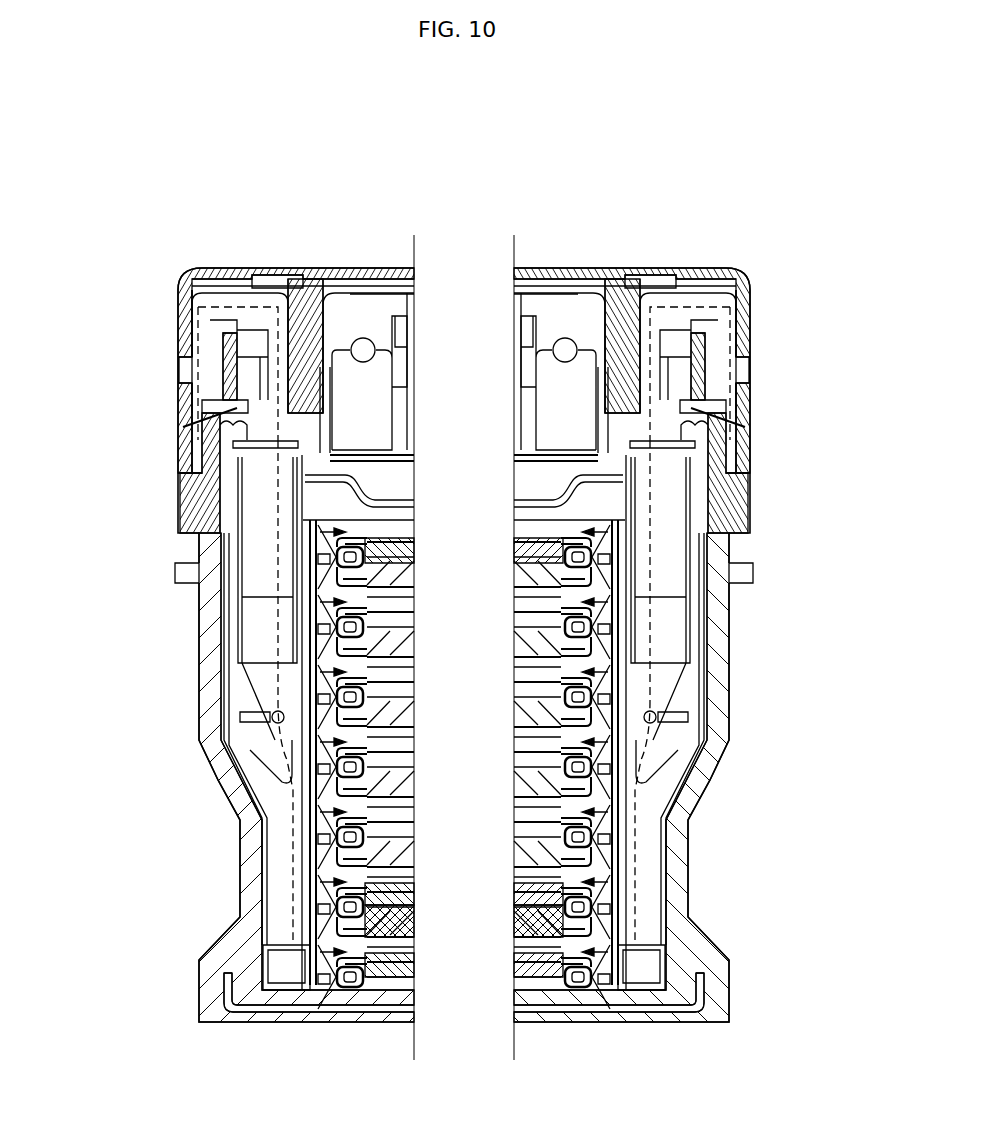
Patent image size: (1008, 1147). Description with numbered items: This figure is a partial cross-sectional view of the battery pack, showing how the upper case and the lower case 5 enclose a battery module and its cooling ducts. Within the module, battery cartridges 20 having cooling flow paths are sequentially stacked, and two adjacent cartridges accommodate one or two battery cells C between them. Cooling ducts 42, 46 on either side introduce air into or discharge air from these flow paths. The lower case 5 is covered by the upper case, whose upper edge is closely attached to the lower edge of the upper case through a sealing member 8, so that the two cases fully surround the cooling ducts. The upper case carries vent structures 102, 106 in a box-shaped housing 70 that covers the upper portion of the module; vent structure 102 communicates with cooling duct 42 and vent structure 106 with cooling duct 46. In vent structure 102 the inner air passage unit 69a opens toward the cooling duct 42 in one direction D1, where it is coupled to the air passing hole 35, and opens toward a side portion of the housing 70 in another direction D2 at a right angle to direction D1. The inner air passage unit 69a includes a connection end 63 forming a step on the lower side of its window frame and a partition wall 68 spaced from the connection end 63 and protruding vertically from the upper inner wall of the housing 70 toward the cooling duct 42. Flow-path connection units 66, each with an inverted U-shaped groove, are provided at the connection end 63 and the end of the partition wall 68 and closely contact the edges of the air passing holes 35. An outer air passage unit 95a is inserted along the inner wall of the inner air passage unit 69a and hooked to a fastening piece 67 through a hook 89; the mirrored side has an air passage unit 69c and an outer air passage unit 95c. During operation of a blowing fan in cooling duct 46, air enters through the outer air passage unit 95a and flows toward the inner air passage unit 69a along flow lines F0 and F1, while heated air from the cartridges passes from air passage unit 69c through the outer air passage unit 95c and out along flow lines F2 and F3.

The vent structure 102 is at (188, 272).
The vent structure 106 is at (740, 272).
The housing 70 is at (372, 268).
The partition wall 68 is at (303, 313).
The fastening piece 67 is at (243, 297).
The hook 89 is at (264, 333).
The inner air passage unit 69a is at (205, 268).
The air passage unit 69c is at (723, 268).
The outer air passage unit 95a is at (178, 305).
The outer air passage unit 95c is at (750, 305).
The connection end 63 is at (213, 457).
The flow-path connection unit 66 is at (585, 417).
The air passing hole 35 is at (601, 433).
The sealing member 8 is at (187, 535).
The lower case 5 is at (205, 983).
The cooling duct 42 is at (272, 877).
The cooling duct 46 is at (656, 877).
The battery cartridge 20 is at (556, 684).
The battery cell C is at (521, 856).
The flow line F0 is at (179, 440).
The flow line F1 is at (179, 379).
The flow line F2 is at (752, 440).
The flow line F3 is at (752, 379).
The direction D1 is at (140, 93).
The direction D2 is at (140, 93).